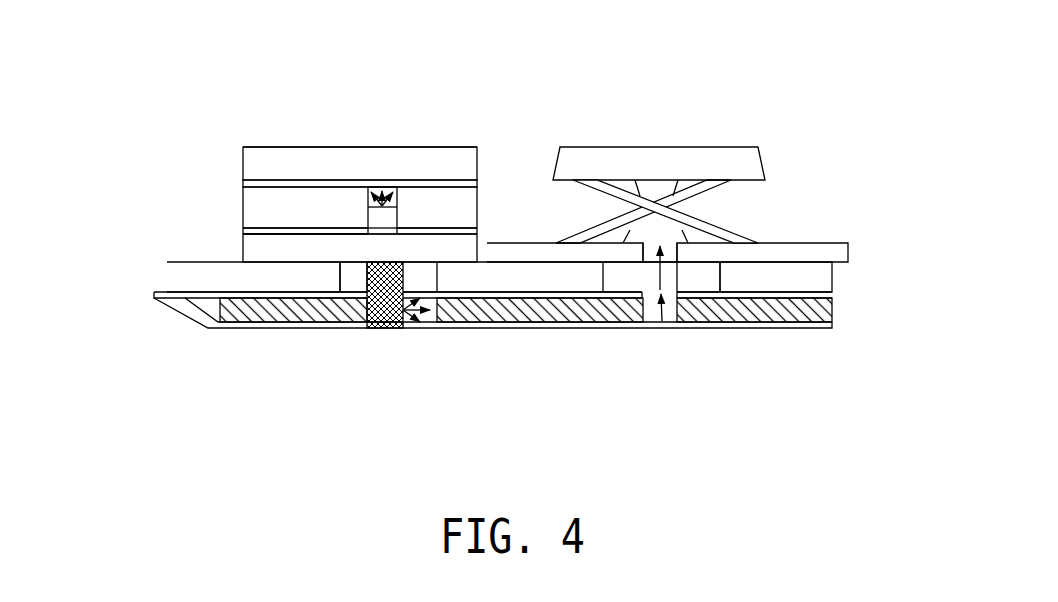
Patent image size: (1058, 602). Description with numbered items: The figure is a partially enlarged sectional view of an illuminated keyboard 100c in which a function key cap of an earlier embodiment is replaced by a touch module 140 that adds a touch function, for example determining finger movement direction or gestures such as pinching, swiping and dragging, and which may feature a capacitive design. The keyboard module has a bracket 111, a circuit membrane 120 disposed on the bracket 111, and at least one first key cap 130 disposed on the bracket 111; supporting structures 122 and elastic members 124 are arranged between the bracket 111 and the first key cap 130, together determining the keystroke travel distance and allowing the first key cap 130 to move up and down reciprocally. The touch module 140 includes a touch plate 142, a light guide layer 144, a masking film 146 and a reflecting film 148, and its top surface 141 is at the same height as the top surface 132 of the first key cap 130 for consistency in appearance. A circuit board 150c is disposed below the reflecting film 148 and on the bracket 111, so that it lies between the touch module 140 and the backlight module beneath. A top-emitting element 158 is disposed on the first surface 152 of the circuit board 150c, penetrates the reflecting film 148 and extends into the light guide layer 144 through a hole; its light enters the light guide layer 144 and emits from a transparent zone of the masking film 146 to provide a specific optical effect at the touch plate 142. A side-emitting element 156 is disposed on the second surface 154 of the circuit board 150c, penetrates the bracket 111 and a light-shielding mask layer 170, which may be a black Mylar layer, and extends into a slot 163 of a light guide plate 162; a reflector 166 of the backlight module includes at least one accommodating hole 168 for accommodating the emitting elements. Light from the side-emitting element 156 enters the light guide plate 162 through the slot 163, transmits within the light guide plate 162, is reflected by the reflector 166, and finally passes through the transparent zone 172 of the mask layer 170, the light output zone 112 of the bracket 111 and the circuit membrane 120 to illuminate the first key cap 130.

The illuminated keyboard 100c is at (112, 75).
The bracket 111 is at (165, 277).
The light output zone 112 is at (693, 270).
The circuit membrane 120 is at (843, 257).
The supporting structure 122 is at (717, 187).
The elastic member 124 is at (653, 188).
The first key cap 130 is at (600, 153).
The top surface 132 is at (662, 146).
The touch module 140 is at (110, 120).
The top surface 141 is at (298, 145).
The touch plate 142 is at (240, 165).
The light guide layer 144 is at (240, 208).
The masking film 146 is at (240, 183).
The reflecting film 148 is at (240, 232).
The circuit board 150c is at (240, 250).
The first surface 152 is at (322, 232).
The second surface 154 is at (350, 266).
The side-emitting element 156 is at (390, 329).
The top-emitting element 158 is at (390, 218).
The light guide plate 162 is at (827, 310).
The slot 163 is at (373, 329).
The reflector 166 is at (827, 325).
The accommodating hole 168 is at (408, 328).
The mask layer 170 is at (153, 295).
The transparent zone 172 is at (662, 321).